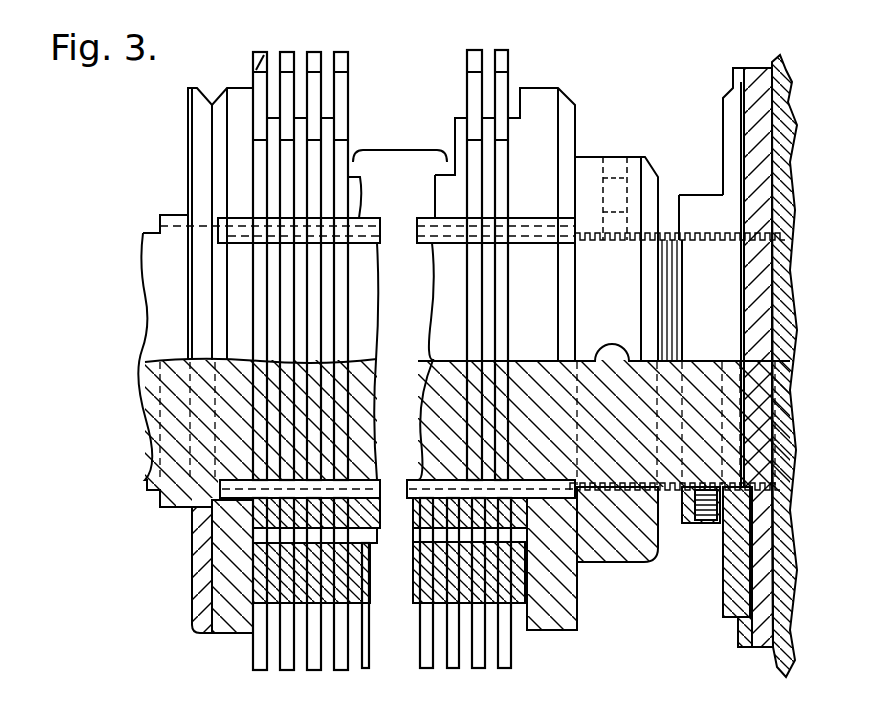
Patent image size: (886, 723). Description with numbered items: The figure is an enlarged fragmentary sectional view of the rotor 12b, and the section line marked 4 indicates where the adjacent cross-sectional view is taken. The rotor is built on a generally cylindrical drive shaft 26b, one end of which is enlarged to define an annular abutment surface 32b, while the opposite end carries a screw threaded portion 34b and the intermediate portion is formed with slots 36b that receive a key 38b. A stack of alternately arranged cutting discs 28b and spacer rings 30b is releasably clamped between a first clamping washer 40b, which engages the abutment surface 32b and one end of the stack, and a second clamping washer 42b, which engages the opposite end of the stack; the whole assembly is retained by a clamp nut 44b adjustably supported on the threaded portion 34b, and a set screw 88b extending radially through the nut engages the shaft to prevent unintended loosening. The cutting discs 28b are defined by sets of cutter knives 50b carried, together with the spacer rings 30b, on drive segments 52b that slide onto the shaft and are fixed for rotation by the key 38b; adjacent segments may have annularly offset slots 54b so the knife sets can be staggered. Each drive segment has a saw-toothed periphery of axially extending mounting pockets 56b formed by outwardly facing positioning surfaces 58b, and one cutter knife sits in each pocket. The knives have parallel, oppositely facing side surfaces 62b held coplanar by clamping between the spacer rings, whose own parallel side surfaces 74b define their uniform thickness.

The rotor 12b is at (646, 86).
The drive shaft 26b is at (145, 421).
The cutting discs 28b is at (288, 46).
The spacer rings 30b is at (490, 108).
The annular abutment surface 32b is at (192, 522).
The screw threaded portion 34b is at (663, 492).
The slots 36b is at (512, 480).
The key 38b is at (308, 480).
The first clamping washer 40b is at (220, 630).
The second clamping washer 42b is at (578, 624).
The clamp nut 44b is at (603, 563).
The cutter knives 50b is at (259, 70).
The drive segments 52b is at (480, 500).
The annularly offset slots 54b is at (270, 497).
The mounting pockets 56b is at (493, 540).
The positioning surfaces 58b is at (469, 632).
The side surfaces 62b is at (262, 662).
The side surfaces 74b is at (320, 585).
The set screw 88b is at (614, 152).
The section line 4- 4 is at (460, 22).